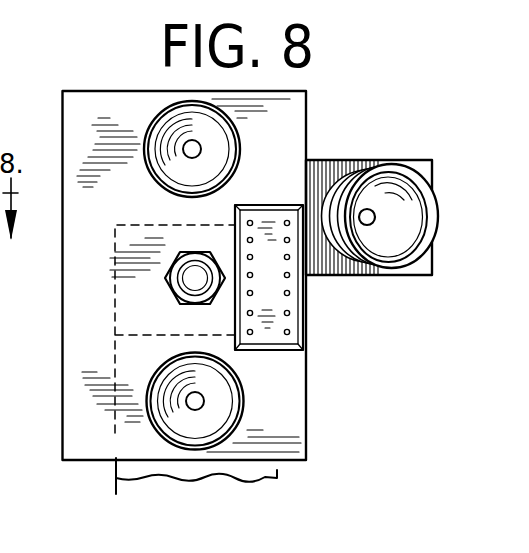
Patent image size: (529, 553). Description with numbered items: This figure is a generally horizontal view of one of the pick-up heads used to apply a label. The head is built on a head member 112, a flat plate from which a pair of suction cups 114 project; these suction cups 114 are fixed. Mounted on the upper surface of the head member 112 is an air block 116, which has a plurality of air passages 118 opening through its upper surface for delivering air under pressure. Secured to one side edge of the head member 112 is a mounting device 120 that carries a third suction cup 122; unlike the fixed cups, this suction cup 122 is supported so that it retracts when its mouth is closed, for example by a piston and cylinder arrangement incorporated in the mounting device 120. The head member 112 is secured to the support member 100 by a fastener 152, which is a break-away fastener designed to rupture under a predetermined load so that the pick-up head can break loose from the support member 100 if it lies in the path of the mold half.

The support member 100 is at (130, 469).
The head member 112 is at (68, 349).
The suction cups 114 is at (221, 138).
The air block 116 is at (277, 352).
The air passages 118 is at (289, 277).
The mounting device 120 is at (325, 158).
The third suction cup 122 is at (393, 178).
The fastener 152 is at (184, 297).